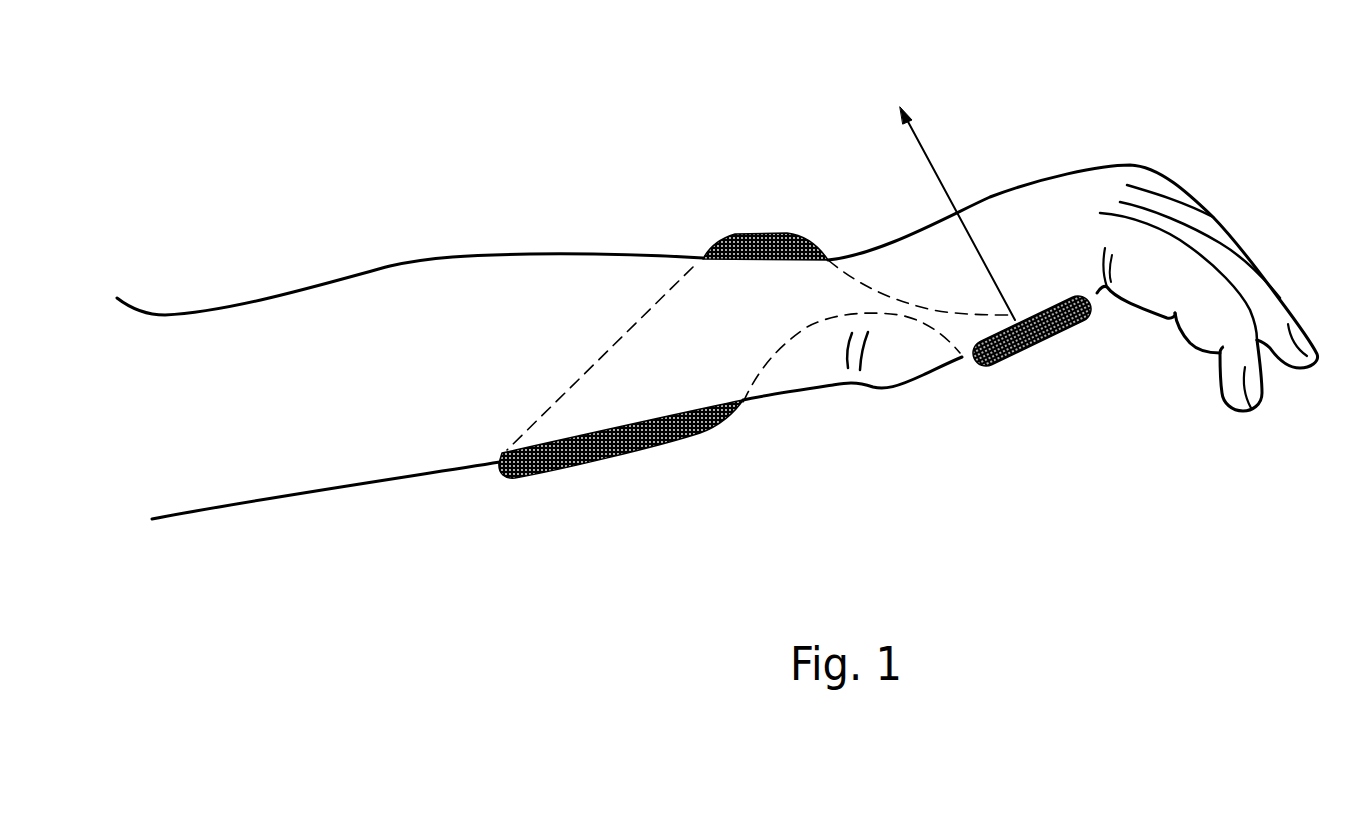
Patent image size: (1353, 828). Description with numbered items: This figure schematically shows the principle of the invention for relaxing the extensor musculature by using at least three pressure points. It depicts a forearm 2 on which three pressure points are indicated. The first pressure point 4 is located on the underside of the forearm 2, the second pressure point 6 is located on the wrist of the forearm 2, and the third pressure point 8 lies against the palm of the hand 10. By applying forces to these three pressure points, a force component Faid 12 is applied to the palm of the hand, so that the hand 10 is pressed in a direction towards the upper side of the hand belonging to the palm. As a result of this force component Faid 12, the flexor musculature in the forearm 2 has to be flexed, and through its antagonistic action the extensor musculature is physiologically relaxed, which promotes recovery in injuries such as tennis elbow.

The forearm 2 is at (390, 266).
The first pressure point 4 is at (617, 462).
The second pressure point 6 is at (765, 233).
The third pressure point 8 is at (1033, 347).
The hand 10 is at (1028, 185).
The force component Faid 12 is at (944, 193).